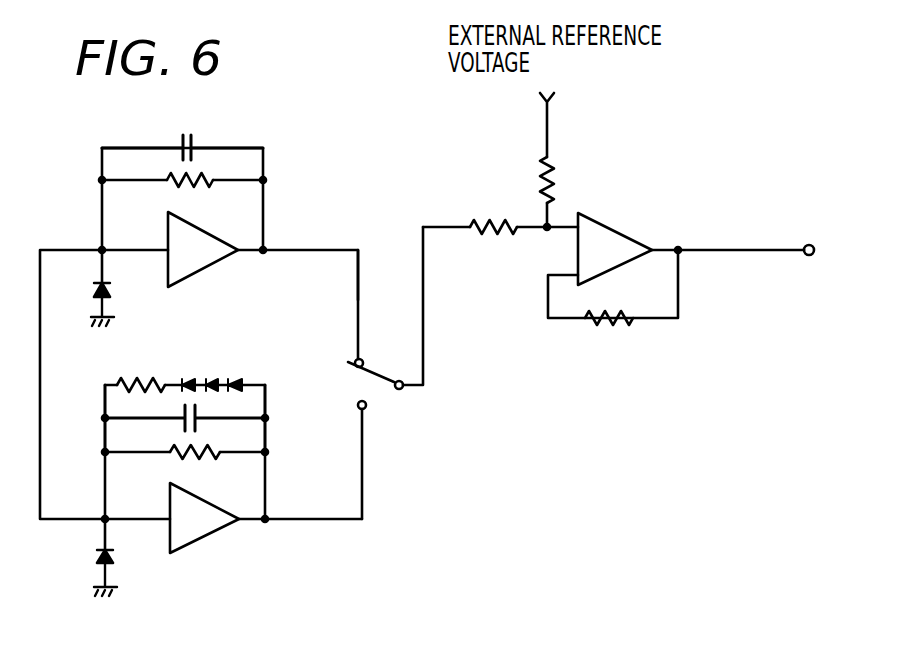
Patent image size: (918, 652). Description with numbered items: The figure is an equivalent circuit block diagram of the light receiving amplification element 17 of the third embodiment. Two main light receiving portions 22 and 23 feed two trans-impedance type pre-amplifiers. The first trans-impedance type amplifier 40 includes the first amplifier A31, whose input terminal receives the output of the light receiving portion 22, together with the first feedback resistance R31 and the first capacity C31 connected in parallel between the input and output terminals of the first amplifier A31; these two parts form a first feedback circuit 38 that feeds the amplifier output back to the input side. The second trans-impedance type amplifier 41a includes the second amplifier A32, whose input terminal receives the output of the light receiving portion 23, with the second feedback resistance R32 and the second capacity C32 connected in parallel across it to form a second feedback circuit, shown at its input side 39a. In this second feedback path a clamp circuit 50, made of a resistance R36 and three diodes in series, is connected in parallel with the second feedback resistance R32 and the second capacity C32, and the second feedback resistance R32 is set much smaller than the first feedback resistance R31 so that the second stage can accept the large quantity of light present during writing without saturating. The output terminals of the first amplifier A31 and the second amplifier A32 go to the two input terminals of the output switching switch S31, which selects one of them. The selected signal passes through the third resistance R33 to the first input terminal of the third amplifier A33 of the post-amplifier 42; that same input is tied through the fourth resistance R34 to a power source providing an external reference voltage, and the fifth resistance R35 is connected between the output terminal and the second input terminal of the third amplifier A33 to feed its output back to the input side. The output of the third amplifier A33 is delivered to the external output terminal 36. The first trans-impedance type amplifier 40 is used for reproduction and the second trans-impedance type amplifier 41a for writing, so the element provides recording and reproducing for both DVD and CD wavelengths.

The first feedback circuit 38 is at (94, 147).
The first capacity C31 is at (195, 142).
The first feedback resistance R31 is at (190, 186).
The first amplifier A31 is at (198, 258).
The first trans-impedance type amplifier 40 is at (292, 221).
The main light receiving portion 22 is at (112, 290).
The resistance R36 is at (147, 382).
The clamp circuit 50 is at (183, 378).
The input terminal 39a is at (98, 414).
The second trans-impedance type amplifier 41a is at (272, 392).
The second capacity C32 is at (197, 426).
The second feedback resistance R32 is at (190, 459).
The second amplifier A32 is at (208, 522).
The main light receiving portion 23 is at (96, 558).
The output switching switch S31 is at (373, 381).
The third resistance R33 is at (500, 222).
The fourth resistance R34 is at (553, 178).
The light receiving amplification element 17 is at (660, 108).
The post-amplifier 42 is at (650, 160).
The third amplifier A33 is at (623, 245).
The external output terminal 36 is at (808, 244).
The fifth resistance R35 is at (600, 324).